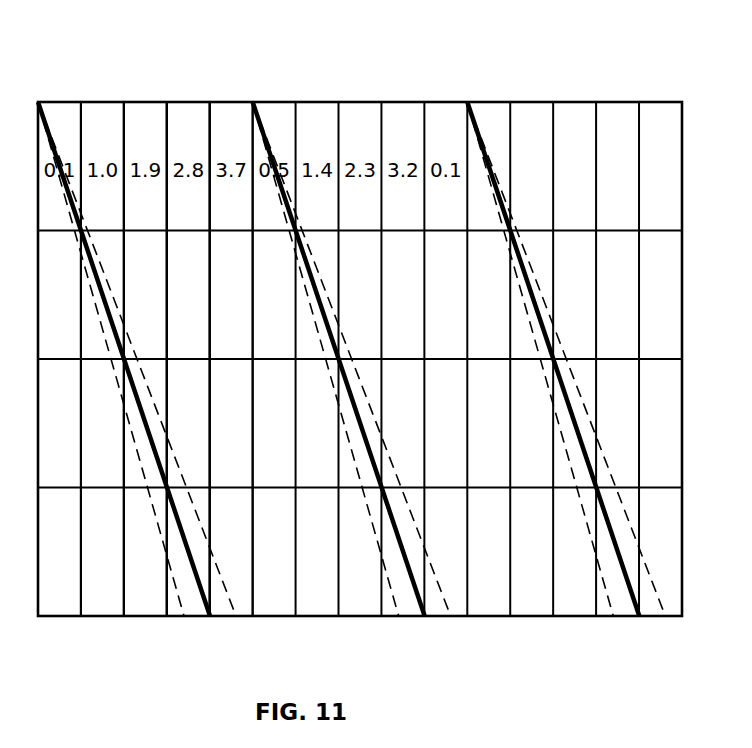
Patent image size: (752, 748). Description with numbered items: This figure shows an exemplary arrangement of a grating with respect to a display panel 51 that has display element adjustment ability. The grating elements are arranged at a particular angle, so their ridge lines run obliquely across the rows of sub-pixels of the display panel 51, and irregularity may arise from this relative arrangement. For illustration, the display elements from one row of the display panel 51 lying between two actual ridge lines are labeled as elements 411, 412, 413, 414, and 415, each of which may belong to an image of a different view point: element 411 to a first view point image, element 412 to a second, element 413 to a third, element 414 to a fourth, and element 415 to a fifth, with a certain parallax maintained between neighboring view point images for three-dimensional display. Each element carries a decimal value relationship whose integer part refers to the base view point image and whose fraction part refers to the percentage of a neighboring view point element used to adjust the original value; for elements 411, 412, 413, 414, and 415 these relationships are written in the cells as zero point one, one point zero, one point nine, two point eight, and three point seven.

The display panel 51 is at (495, 102).
The display element 411 is at (50, 120).
The display element 412 is at (100, 122).
The display element 413 is at (145, 127).
The display element 414 is at (192, 135).
The display element 415 is at (237, 143).